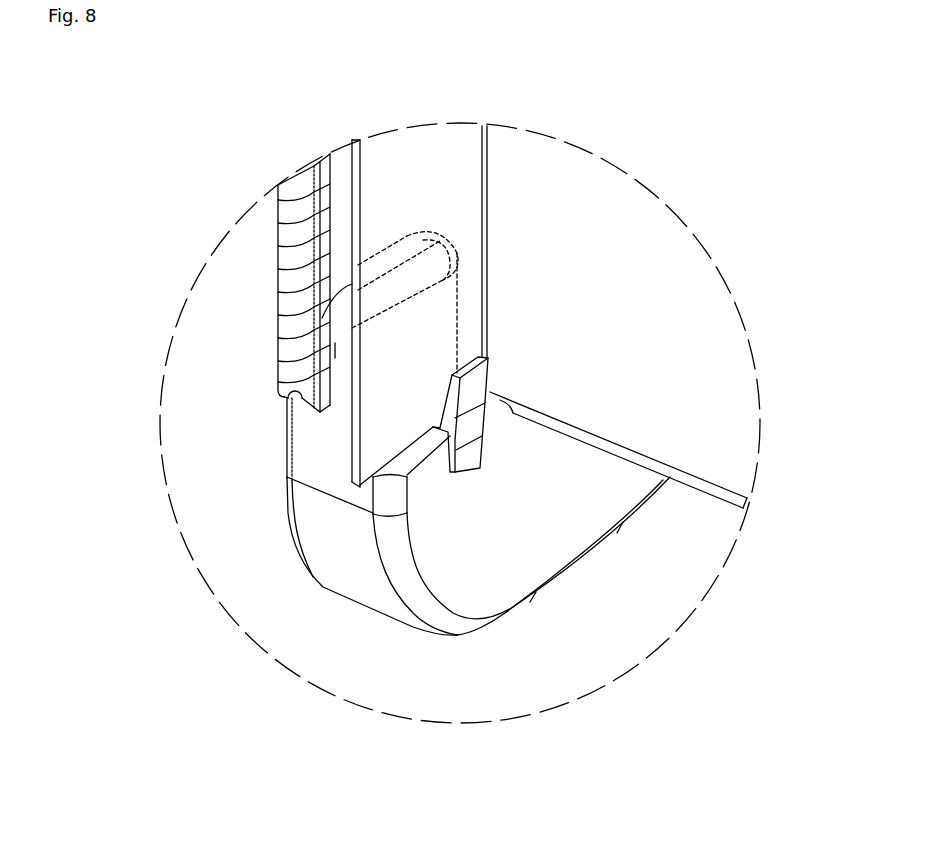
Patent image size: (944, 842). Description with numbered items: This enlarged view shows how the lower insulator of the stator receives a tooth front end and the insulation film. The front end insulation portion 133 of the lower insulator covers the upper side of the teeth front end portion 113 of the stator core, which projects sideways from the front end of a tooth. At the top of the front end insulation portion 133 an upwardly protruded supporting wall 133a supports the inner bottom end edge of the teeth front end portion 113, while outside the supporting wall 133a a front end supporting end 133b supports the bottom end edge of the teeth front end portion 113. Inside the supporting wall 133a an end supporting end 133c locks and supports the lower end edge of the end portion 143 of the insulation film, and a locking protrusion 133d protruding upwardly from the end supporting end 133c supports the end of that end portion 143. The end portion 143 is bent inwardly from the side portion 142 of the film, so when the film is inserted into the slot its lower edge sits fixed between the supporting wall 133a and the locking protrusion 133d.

The teeth front end portion 113 is at (278, 256).
The side portion 142 is at (585, 230).
The end portion 143 is at (416, 169).
The front end insulation portion 133 is at (360, 630).
The supporting wall 133a is at (335, 350).
The front end supporting end 133b is at (287, 399).
The end supporting end 133c is at (426, 445).
The locking protrusion 133d is at (490, 378).